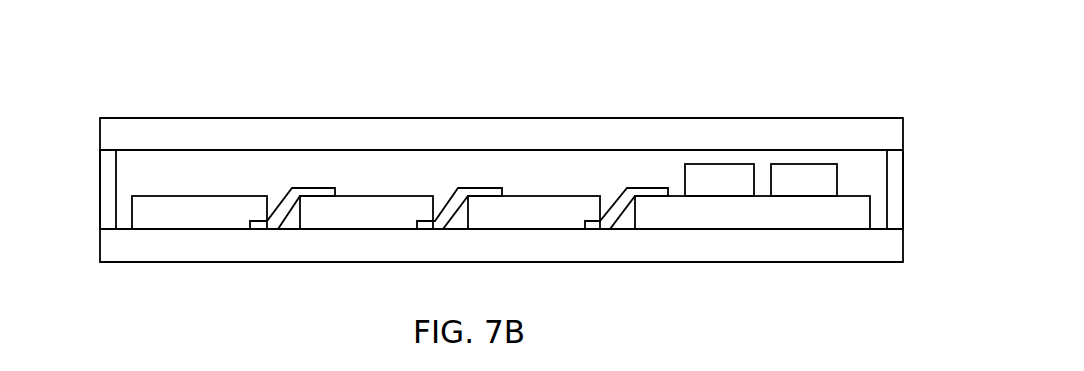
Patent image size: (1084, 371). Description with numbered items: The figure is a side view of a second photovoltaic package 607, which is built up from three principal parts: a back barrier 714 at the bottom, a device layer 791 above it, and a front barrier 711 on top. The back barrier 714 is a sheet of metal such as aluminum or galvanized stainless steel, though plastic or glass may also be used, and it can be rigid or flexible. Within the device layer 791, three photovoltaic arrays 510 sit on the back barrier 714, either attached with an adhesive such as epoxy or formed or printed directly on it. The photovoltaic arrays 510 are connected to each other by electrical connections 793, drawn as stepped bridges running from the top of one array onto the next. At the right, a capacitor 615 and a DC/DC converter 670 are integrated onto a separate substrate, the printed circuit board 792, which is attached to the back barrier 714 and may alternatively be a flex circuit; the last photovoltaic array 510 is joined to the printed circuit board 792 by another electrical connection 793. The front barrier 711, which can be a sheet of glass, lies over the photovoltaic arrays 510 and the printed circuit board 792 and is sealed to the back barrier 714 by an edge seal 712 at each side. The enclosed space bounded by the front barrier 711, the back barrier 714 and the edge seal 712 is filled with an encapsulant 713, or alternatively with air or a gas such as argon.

The photovoltaic package 607 is at (154, 57).
The front barrier 711 is at (318, 118).
The edge seal 712 is at (100, 184).
The encapsulant 713 is at (215, 175).
The back barrier 714 is at (501, 245).
The device layer 791 is at (93, 195).
The photovoltaic array 510 is at (366, 212).
The electrical connection 793 is at (653, 188).
The printed circuit board 792 is at (752, 212).
The capacitor 615 is at (719, 180).
The DC/DC converter 670 is at (804, 180).